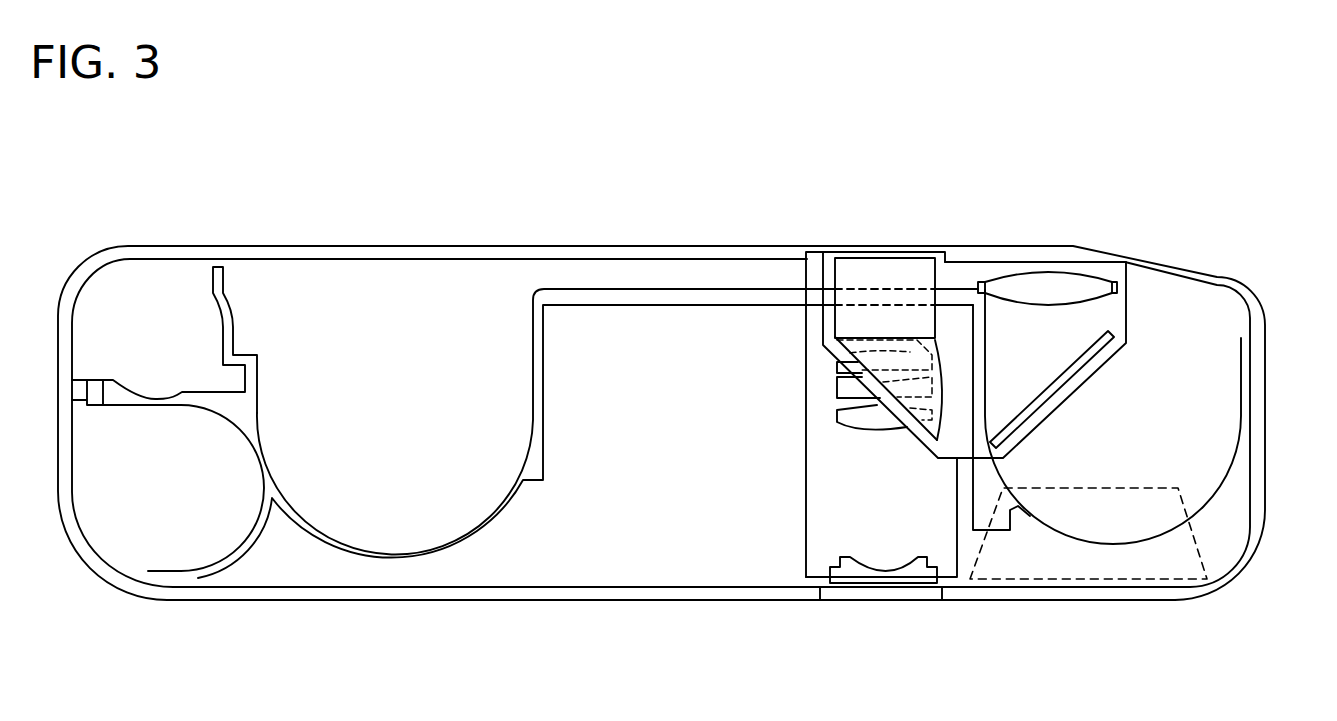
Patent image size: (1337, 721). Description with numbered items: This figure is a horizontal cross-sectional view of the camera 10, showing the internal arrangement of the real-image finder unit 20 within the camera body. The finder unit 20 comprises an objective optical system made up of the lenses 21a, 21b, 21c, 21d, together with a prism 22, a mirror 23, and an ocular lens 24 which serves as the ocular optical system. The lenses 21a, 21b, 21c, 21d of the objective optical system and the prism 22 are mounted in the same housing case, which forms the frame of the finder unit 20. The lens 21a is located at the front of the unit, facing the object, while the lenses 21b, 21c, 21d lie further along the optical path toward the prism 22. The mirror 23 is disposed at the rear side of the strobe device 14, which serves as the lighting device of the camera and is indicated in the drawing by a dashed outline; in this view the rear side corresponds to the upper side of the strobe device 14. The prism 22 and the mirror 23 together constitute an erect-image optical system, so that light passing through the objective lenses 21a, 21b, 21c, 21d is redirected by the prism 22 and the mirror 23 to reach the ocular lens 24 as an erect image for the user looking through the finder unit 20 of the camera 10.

The camera body 10 is at (612, 607).
The strobe device 14 is at (1197, 547).
The real-image finder unit 20 is at (797, 518).
The lens 21a is at (806, 575).
The lens 21b is at (837, 418).
The lens 21c is at (837, 387).
The lens 21d is at (837, 364).
The prism 22 is at (890, 270).
The mirror 23 is at (1075, 376).
The ocular lens 24 is at (1048, 282).